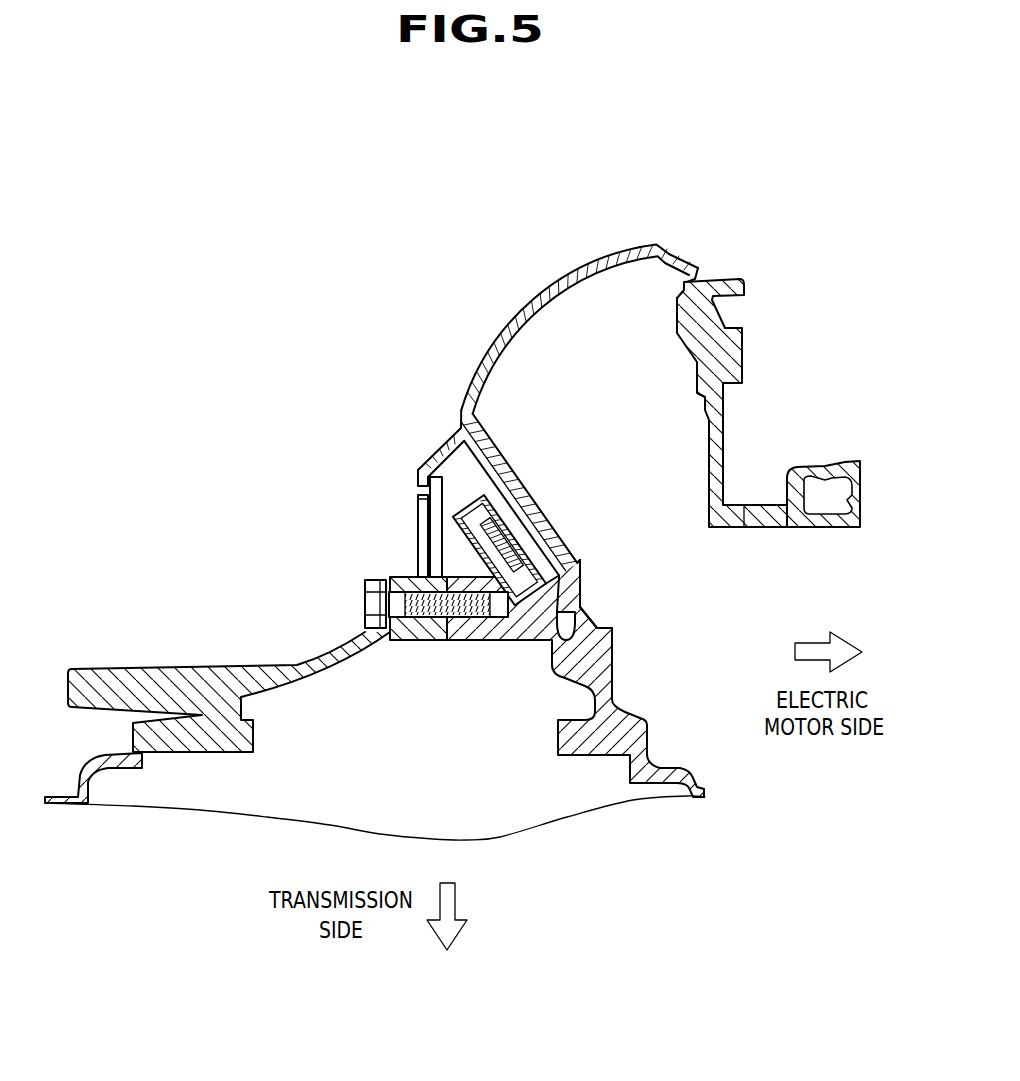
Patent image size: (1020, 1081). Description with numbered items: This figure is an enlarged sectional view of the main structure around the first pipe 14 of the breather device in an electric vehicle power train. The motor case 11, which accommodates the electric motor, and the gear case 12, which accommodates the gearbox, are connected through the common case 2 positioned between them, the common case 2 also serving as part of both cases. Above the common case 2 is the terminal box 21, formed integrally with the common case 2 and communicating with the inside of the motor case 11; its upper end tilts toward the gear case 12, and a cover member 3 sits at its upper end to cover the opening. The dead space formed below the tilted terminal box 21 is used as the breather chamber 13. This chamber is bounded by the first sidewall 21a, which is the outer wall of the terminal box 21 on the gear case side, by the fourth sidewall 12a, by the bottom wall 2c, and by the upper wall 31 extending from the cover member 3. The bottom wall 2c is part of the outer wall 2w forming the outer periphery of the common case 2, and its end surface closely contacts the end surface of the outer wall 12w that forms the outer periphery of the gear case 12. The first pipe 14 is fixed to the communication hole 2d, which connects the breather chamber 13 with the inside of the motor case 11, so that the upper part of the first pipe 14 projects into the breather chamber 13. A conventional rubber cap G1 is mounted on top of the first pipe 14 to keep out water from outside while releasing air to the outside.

The common case 2 is at (597, 766).
The bottom wall 2c is at (483, 605).
The outer wall 2w is at (418, 608).
The communication hole 2d is at (593, 620).
The cover member 3 is at (537, 286).
The motor case 11 is at (828, 453).
The gear case 12 is at (121, 658).
The fourth sidewall 12a is at (418, 478).
The outer wall 12w is at (428, 648).
The breather chamber 13 is at (462, 468).
The first pipe 14 is at (436, 550).
The terminal box 21 is at (715, 281).
The first sidewall 21a is at (520, 485).
The upper wall 31 is at (447, 447).
The rubber cap G1 is at (420, 505).